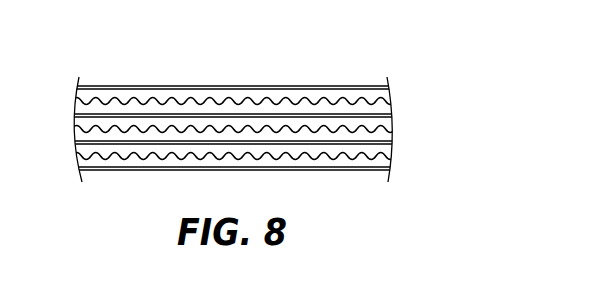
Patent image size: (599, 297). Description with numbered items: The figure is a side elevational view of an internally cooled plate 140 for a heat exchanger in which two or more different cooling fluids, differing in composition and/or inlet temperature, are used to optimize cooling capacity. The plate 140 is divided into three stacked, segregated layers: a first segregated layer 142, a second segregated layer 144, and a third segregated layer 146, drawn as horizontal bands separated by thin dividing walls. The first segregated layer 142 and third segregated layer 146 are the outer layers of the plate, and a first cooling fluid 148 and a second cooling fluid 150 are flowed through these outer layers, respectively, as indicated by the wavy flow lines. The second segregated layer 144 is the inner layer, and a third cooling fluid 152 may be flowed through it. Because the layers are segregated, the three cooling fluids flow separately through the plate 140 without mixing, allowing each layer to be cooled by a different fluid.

The internally cooled plate 140 is at (179, 38).
The first segregated layer 142 is at (84, 100).
The second segregated layer 144 is at (86, 123).
The third segregated layer 146 is at (90, 150).
The first cooling fluid 148 is at (375, 110).
The third cooling fluid 152 is at (387, 135).
The second cooling fluid 150 is at (377, 160).